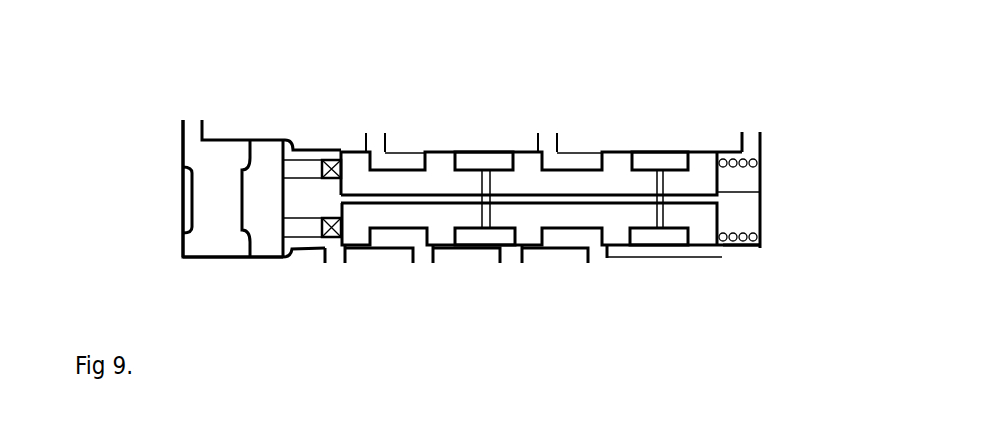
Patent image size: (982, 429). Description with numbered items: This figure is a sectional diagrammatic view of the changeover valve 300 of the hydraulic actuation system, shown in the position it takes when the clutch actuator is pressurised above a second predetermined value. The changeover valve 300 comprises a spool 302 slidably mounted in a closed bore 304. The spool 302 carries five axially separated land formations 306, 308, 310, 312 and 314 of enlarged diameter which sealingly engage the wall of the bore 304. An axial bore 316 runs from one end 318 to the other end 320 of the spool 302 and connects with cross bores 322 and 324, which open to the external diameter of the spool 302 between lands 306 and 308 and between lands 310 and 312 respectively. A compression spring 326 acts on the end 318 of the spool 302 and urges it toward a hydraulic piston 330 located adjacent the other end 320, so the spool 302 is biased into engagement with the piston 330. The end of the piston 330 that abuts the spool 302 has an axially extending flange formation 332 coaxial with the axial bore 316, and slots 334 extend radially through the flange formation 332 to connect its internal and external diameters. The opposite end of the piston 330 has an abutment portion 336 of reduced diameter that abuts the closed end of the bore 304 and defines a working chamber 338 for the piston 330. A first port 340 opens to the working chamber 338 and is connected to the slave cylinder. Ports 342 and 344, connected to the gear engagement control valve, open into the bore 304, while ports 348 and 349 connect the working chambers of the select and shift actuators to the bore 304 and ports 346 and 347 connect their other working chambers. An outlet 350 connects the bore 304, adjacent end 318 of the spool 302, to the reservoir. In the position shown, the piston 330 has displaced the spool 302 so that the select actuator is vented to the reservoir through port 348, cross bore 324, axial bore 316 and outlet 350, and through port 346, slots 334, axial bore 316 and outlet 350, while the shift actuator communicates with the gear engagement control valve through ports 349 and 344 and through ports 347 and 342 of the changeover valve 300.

The changeover valve 300 is at (170, 178).
The spool 302 is at (720, 213).
The closed bore 304 is at (740, 182).
The land formation 306 is at (697, 248).
The land formation 308 is at (618, 162).
The land formation 310 is at (530, 160).
The land formation 312 is at (440, 150).
The land formation 314 is at (340, 140).
The axial bore 316 is at (760, 192).
The end of spool 318 is at (752, 145).
The other end of spool 320 is at (330, 215).
The cross bore 322 is at (657, 170).
The cross bore 324 is at (484, 168).
The compression spring 326 is at (727, 248).
The hydraulic piston 330 is at (238, 222).
The flange formation 332 is at (313, 173).
The slots 334 is at (333, 248).
The abutment portion 336 is at (240, 195).
The working chamber 338 is at (182, 152).
The first port 340 is at (180, 125).
The port 342 is at (377, 140).
The port 344 is at (548, 137).
The port 346 is at (345, 250).
The port 347 is at (430, 252).
The port 348 is at (515, 250).
The port 349 is at (603, 253).
The outlet 350 is at (762, 135).